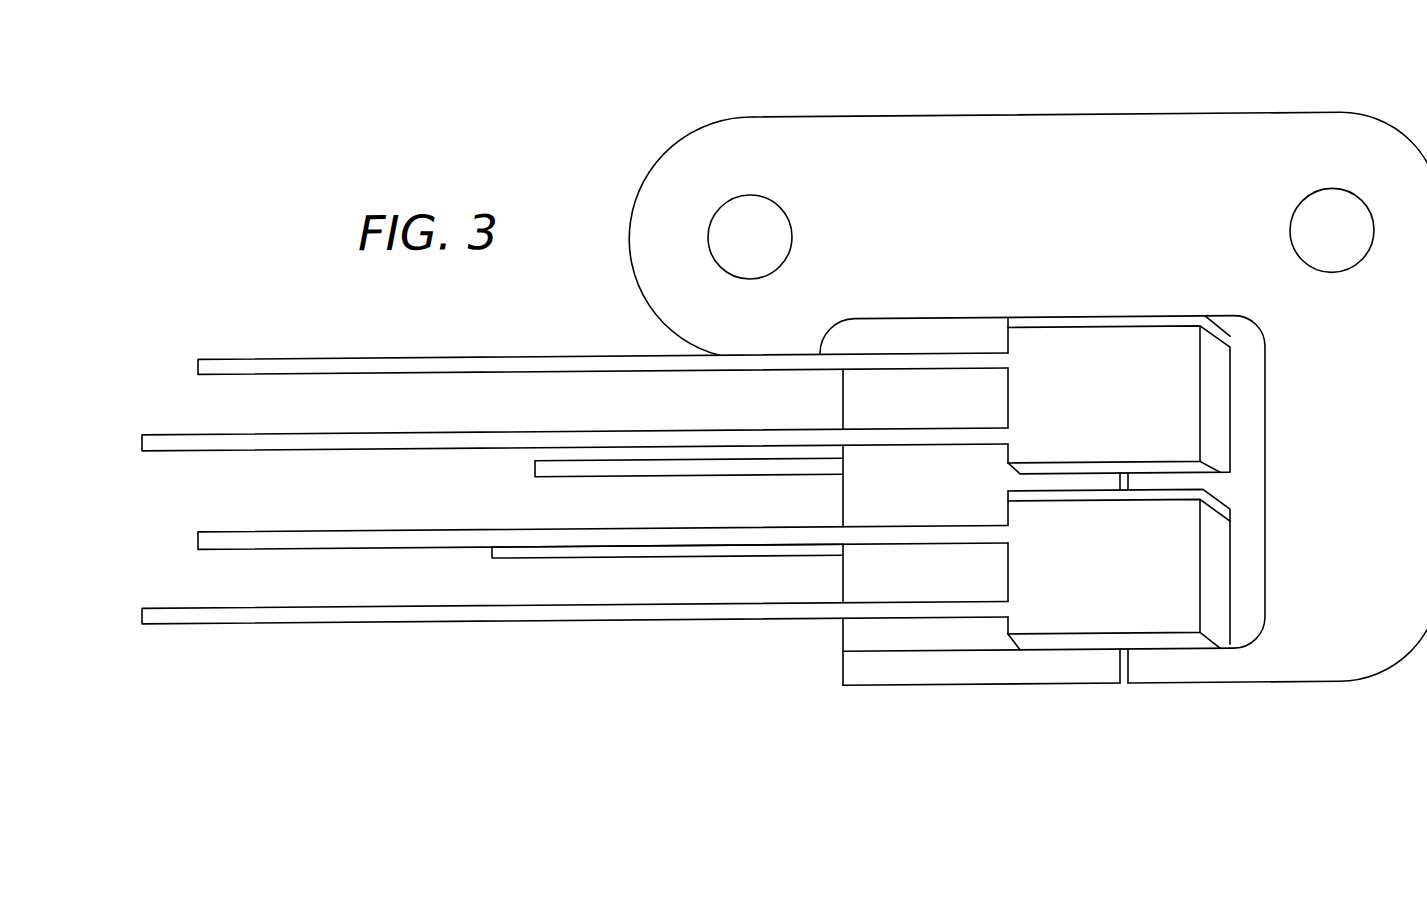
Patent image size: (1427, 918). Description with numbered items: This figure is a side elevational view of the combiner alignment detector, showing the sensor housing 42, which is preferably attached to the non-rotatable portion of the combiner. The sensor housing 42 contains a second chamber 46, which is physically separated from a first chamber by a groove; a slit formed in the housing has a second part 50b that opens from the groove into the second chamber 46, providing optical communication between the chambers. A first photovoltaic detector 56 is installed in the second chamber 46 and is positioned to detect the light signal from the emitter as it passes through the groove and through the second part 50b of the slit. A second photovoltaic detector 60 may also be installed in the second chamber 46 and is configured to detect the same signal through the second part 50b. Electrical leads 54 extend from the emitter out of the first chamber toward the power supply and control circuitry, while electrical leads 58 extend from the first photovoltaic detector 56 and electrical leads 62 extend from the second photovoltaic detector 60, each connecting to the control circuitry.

The sensor housing 42 is at (1103, 129).
The second chamber 46 is at (855, 635).
The second part of slit 50b is at (1123, 674).
The electrical leads 54 is at (592, 475).
The first photovoltaic detector 56 is at (1040, 608).
The electrical leads 58 is at (422, 543).
The second photovoltaic detector 60 is at (1025, 403).
The electrical leads 62 is at (390, 369).